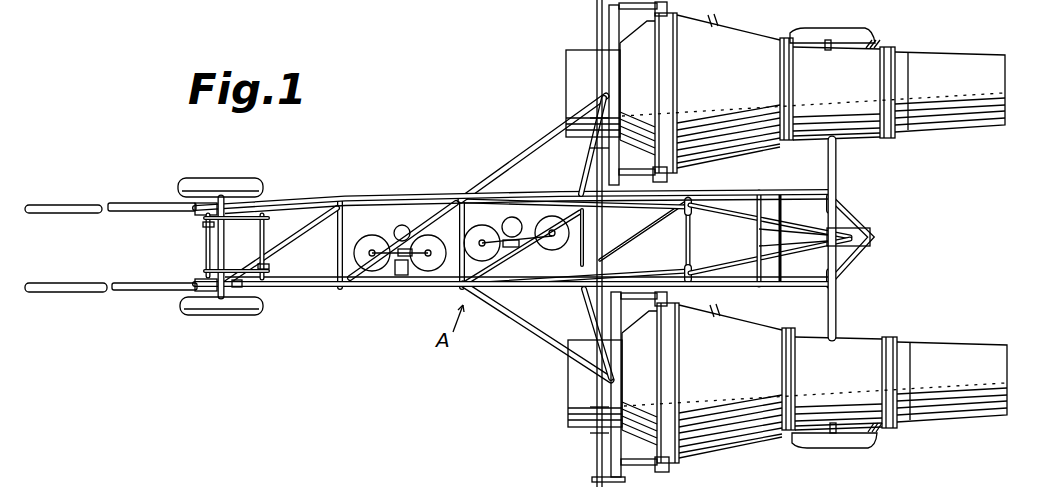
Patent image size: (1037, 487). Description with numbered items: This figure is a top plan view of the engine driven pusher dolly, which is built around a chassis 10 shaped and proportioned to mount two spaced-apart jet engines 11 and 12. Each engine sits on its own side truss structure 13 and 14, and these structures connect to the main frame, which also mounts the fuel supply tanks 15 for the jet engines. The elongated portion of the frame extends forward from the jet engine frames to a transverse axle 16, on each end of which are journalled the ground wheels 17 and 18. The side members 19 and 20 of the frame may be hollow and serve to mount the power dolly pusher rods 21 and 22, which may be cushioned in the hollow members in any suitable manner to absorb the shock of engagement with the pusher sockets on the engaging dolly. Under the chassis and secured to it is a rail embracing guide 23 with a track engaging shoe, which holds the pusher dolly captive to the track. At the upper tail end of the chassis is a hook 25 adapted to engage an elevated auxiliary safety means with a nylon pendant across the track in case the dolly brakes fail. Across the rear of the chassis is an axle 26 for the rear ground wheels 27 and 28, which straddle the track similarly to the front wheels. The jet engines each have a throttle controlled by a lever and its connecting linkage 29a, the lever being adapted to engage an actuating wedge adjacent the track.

The chassis 10 is at (402, 284).
The jet engine 11 is at (745, 394).
The jet engine 12 is at (738, 92).
The side truss structure 13 is at (589, 298).
The side truss structure 14 is at (586, 177).
The fuel supply tanks 15 is at (425, 243).
The transverse axle 16 is at (210, 271).
The ground wheel 17 is at (245, 303).
The ground wheel 18 is at (247, 183).
The side member 19 is at (310, 288).
The side member 20 is at (302, 205).
The pusher rod 21 is at (90, 297).
The pusher rod 22 is at (78, 212).
The rail embracing guide 23 is at (237, 243).
The hook 25 is at (853, 236).
The axle 26 is at (840, 318).
The rear ground wheel 27 is at (868, 440).
The rear ground wheel 28 is at (862, 32).
The connecting linkage 29a is at (600, 452).